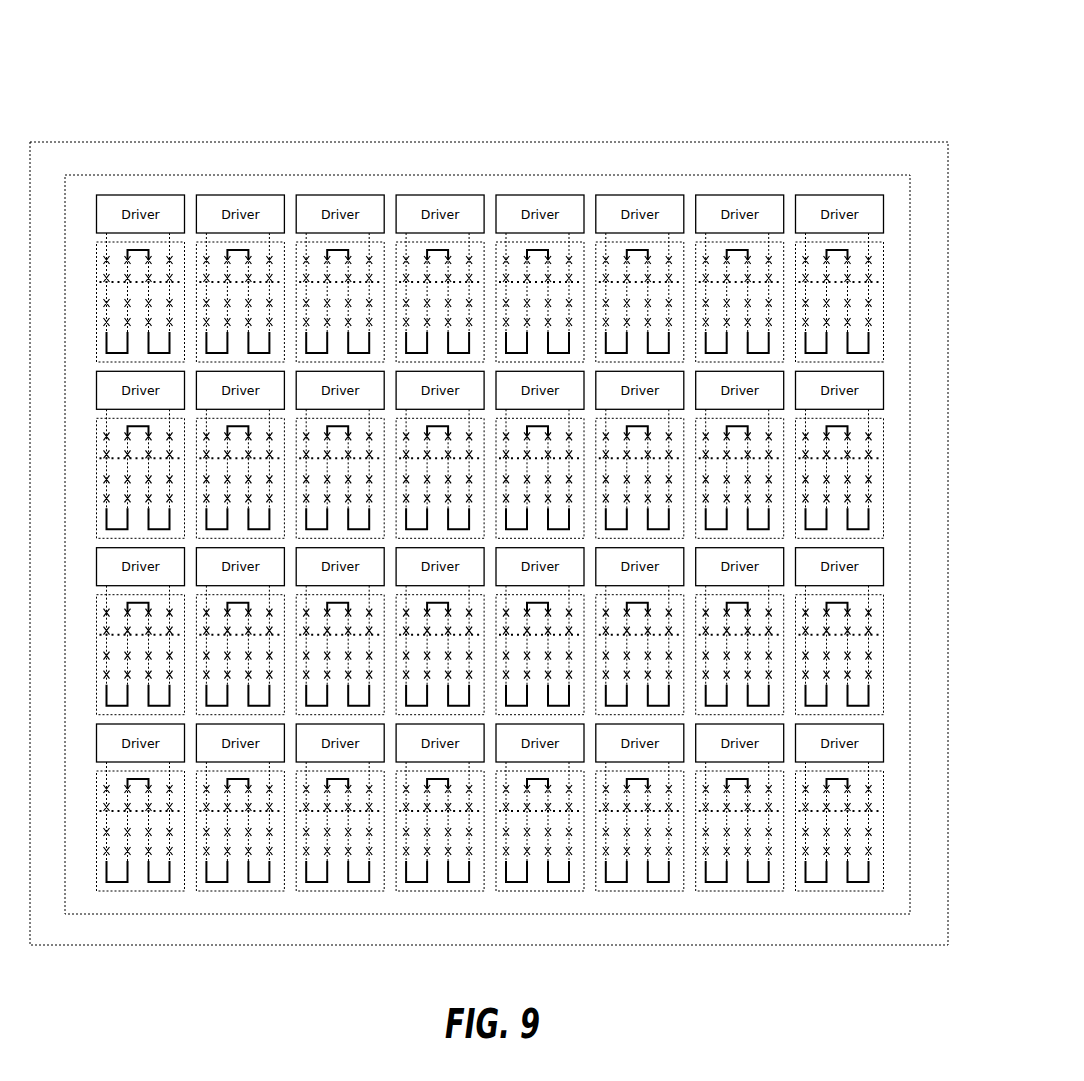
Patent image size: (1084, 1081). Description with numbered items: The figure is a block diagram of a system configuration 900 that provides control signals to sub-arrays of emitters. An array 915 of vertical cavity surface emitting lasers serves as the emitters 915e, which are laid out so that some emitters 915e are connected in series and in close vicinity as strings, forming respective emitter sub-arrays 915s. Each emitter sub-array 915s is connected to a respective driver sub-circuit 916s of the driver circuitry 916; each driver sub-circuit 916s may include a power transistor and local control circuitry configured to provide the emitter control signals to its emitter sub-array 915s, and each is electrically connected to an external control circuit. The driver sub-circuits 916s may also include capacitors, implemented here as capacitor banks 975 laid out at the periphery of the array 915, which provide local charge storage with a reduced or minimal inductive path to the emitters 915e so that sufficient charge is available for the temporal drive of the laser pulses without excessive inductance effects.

The system configuration 900 is at (743, 62).
The capacitor bank 975 is at (525, 165).
The driver circuit 916 is at (492, 429).
The driver sub-circuit 916s is at (140, 194).
The array 915 is at (205, 898).
The emitter sub-array 915s is at (484, 623).
The emitter 915e is at (869, 851).